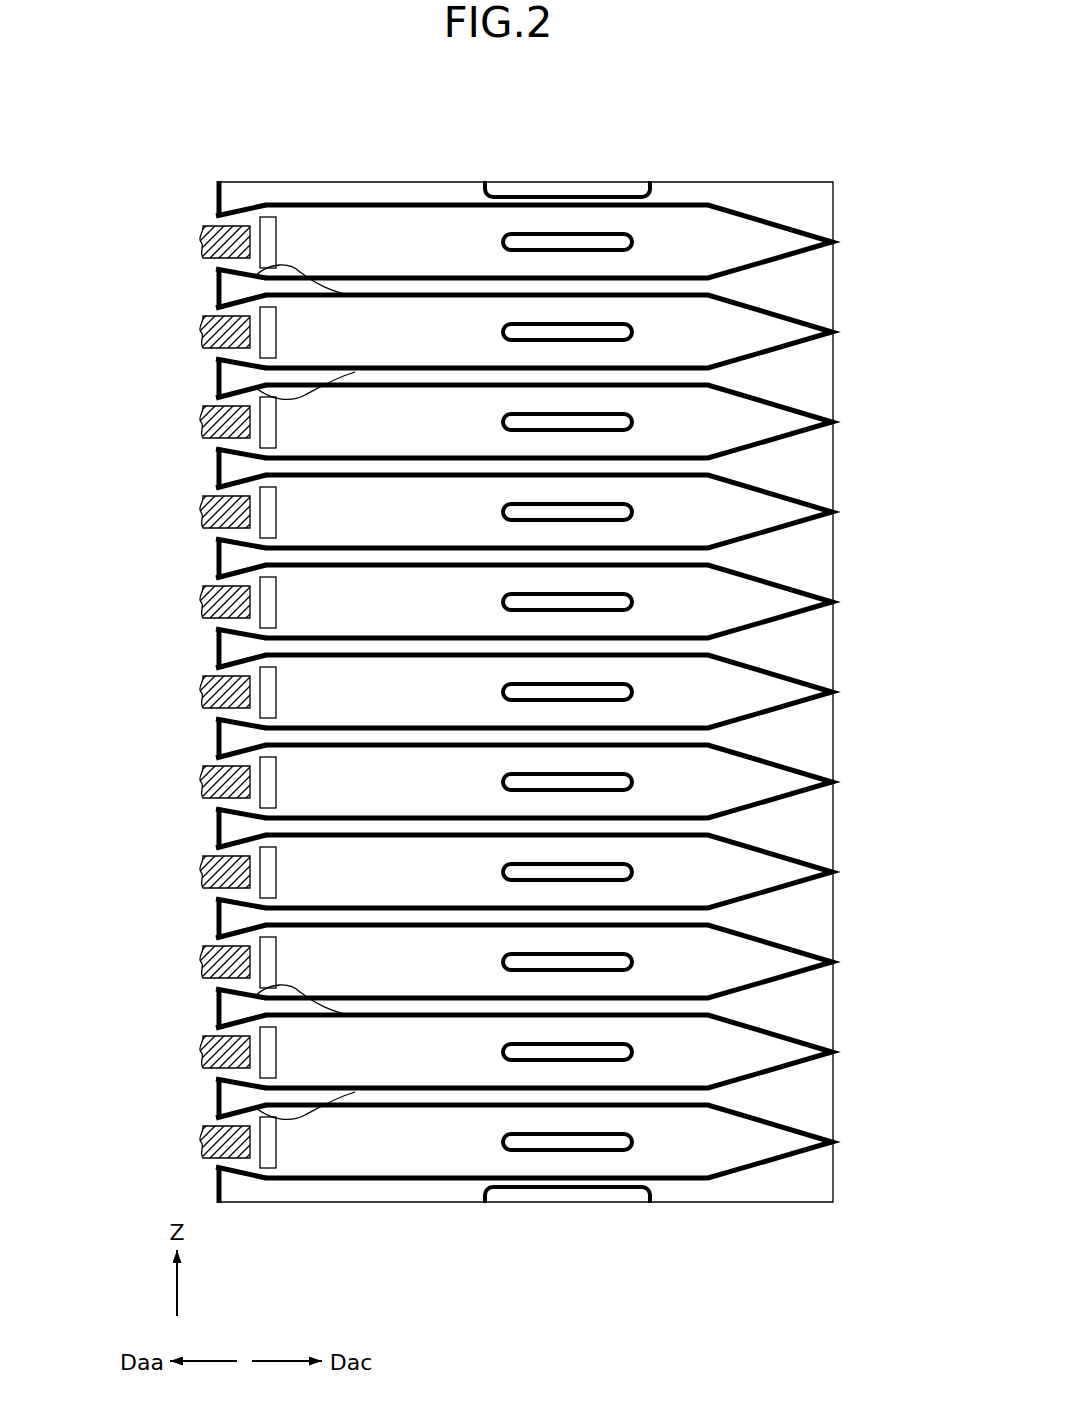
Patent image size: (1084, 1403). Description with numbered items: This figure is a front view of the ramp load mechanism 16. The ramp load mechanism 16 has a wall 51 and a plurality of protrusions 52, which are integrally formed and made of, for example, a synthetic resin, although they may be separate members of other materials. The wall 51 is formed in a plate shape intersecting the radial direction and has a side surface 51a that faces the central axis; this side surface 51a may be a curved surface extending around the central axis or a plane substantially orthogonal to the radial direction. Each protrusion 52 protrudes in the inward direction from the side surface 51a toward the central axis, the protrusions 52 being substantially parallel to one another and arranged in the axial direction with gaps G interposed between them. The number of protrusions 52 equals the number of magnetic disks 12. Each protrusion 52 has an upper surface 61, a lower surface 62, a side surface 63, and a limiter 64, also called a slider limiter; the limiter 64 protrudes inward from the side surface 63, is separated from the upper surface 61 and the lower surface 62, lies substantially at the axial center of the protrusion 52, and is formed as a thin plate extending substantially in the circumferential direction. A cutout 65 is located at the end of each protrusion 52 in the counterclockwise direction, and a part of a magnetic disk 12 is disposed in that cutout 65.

The ramp load mechanism 16 is at (214, 160).
The magnetic disk 12 is at (200, 330).
The wall 51 is at (551, 662).
The side surface 51a is at (768, 200).
The protrusion 52 is at (806, 243).
The upper surface 61 is at (262, 281).
The lower surface 62 is at (264, 388).
The side surface 63 is at (622, 397).
The limiter 64 is at (523, 423).
The cutout 65 is at (212, 306).
The gap G is at (713, 287).